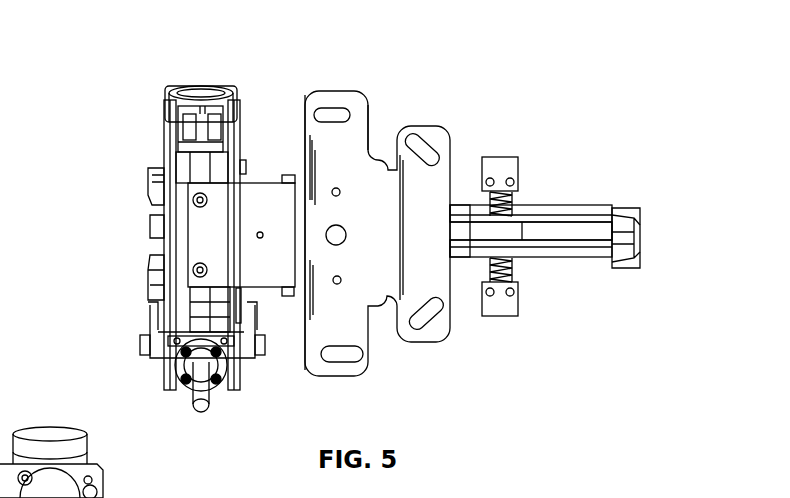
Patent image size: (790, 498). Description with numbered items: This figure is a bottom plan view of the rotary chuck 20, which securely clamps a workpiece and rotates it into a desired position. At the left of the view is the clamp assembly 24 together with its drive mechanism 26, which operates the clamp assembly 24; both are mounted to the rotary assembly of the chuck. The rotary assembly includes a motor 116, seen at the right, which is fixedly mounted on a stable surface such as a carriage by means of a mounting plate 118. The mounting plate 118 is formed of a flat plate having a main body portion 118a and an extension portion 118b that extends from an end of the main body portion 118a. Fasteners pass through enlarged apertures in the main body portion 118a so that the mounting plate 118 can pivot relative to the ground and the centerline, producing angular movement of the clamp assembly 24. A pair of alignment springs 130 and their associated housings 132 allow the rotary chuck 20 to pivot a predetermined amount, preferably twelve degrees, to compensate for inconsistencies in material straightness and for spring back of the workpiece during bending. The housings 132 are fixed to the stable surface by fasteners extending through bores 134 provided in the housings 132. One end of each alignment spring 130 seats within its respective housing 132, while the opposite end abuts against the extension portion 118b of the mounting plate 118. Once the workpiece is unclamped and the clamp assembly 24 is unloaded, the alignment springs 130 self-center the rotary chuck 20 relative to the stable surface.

The rotary chuck 20 is at (281, 73).
The clamp assembly 24 is at (142, 298).
The drive mechanism 26 is at (220, 398).
The motor 116 is at (586, 227).
The mounting plate 118 is at (360, 318).
The main body portion 118a is at (364, 188).
The extension portion 118b is at (492, 233).
The alignment springs 130 is at (514, 212).
The housings 132 is at (508, 157).
The bores 134 is at (484, 160).